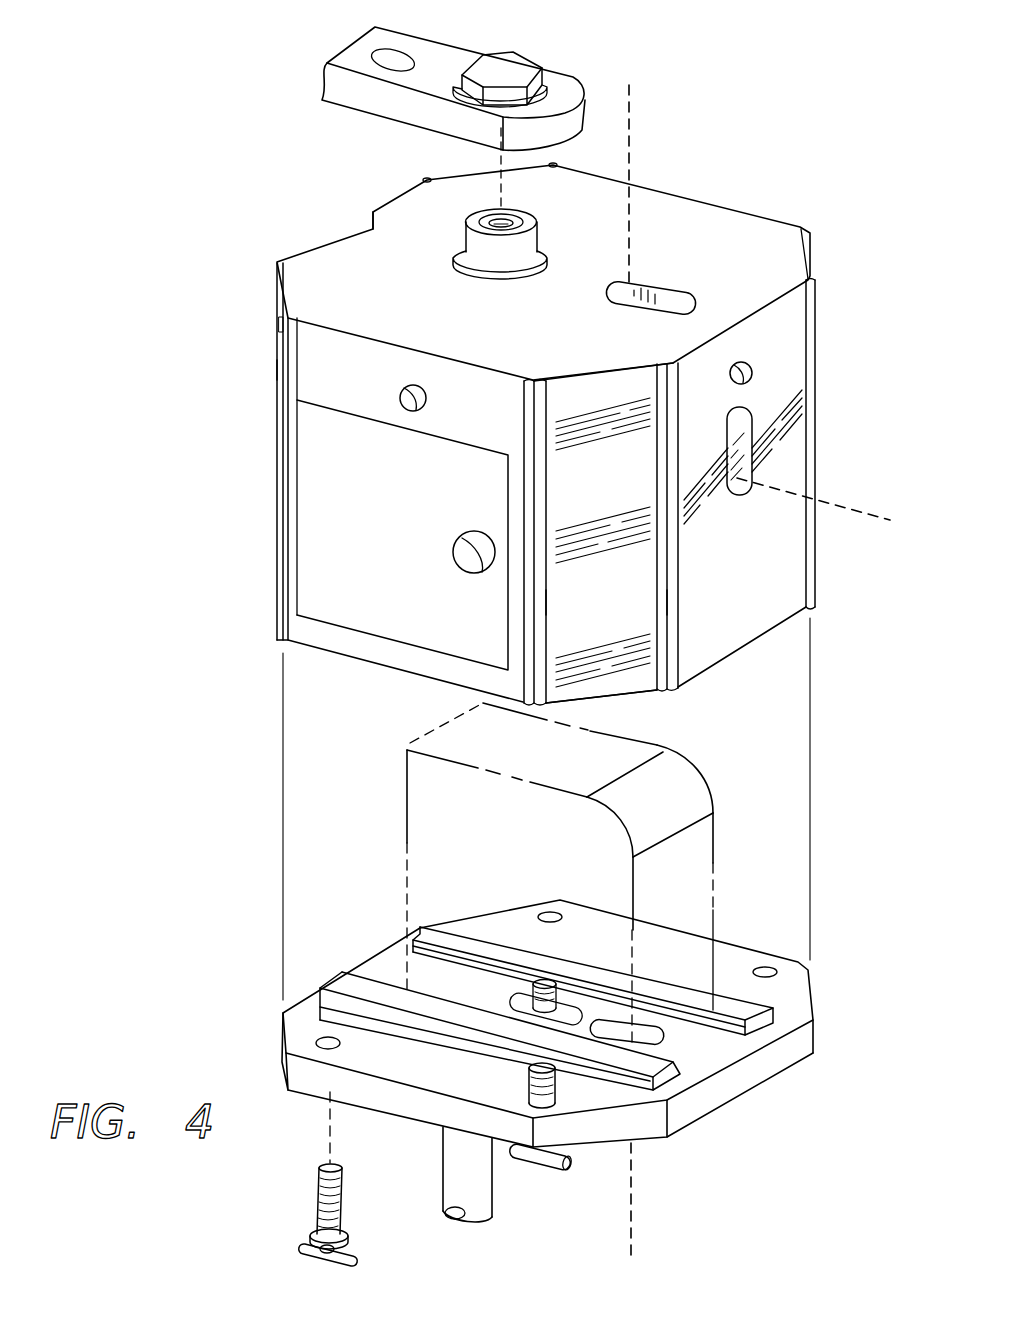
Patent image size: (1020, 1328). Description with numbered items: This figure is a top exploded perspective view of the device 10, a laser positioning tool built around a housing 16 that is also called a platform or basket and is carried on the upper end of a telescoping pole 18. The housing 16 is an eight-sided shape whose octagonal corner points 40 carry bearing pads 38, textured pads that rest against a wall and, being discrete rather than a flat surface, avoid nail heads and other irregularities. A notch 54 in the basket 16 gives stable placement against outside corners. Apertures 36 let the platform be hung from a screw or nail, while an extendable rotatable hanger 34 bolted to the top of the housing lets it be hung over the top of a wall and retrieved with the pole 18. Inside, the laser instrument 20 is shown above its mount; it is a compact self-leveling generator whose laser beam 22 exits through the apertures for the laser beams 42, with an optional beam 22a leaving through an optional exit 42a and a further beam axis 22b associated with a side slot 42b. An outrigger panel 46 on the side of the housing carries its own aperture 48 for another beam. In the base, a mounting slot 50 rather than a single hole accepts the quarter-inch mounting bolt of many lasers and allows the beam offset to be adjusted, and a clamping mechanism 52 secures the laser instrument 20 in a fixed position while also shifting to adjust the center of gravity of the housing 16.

The device 10 is at (181, 254).
The housing 16 is at (348, 643).
The telescoping pole 18 is at (455, 1178).
The laser instrument 20 is at (392, 799).
The laser beam 22 is at (633, 1200).
The optional beam 22a is at (632, 127).
The side axis 22b is at (848, 517).
The extendable rotatable hanger 34 is at (515, 59).
The apertures 36 is at (405, 395).
The bearing pads 38 is at (289, 369).
The octagonal corner points 40 is at (535, 380).
The apertures for the laser beams 42 is at (683, 1022).
The optional exits 42a is at (682, 298).
The side slot 42b is at (740, 497).
The outrigger panel 46 is at (330, 582).
The aperture 48 is at (453, 548).
The mounting slot 50 is at (416, 990).
The clamping mechanism 52 is at (318, 1210).
The notch 54 is at (369, 228).